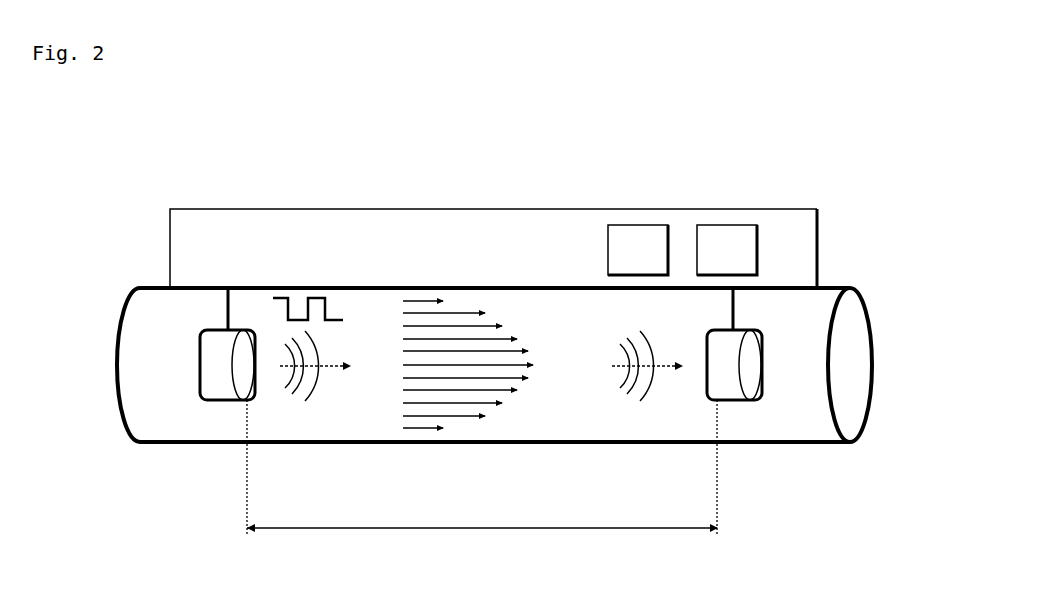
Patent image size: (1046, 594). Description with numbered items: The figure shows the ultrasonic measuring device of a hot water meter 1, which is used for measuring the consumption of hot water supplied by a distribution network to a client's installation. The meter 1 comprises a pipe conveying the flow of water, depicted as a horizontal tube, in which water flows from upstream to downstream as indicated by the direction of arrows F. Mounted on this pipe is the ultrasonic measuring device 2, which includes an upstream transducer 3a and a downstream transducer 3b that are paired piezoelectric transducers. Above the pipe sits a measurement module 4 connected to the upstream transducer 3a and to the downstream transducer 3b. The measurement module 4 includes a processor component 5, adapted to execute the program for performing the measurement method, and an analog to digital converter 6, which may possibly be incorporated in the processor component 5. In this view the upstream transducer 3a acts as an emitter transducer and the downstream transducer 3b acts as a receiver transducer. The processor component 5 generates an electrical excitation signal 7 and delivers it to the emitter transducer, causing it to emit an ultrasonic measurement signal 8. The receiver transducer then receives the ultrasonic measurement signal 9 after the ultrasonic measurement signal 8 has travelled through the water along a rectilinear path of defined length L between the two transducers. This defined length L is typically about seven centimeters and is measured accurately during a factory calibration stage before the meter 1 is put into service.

The hot water meter 1 is at (147, 242).
The ultrasonic measuring device 2 is at (834, 204).
The upstream transducer 3a is at (200, 368).
The downstream transducer 3b is at (762, 370).
The measurement module 4 is at (440, 209).
The processor component 5 is at (638, 250).
The analog to digital converter 6 is at (727, 250).
The electrical excitation signal 7 is at (316, 298).
The ultrasonic measurement signal 8 is at (318, 396).
The ultrasonic measurement signal 9 is at (651, 396).
The arrows F is at (457, 378).
The defined length L is at (482, 477).